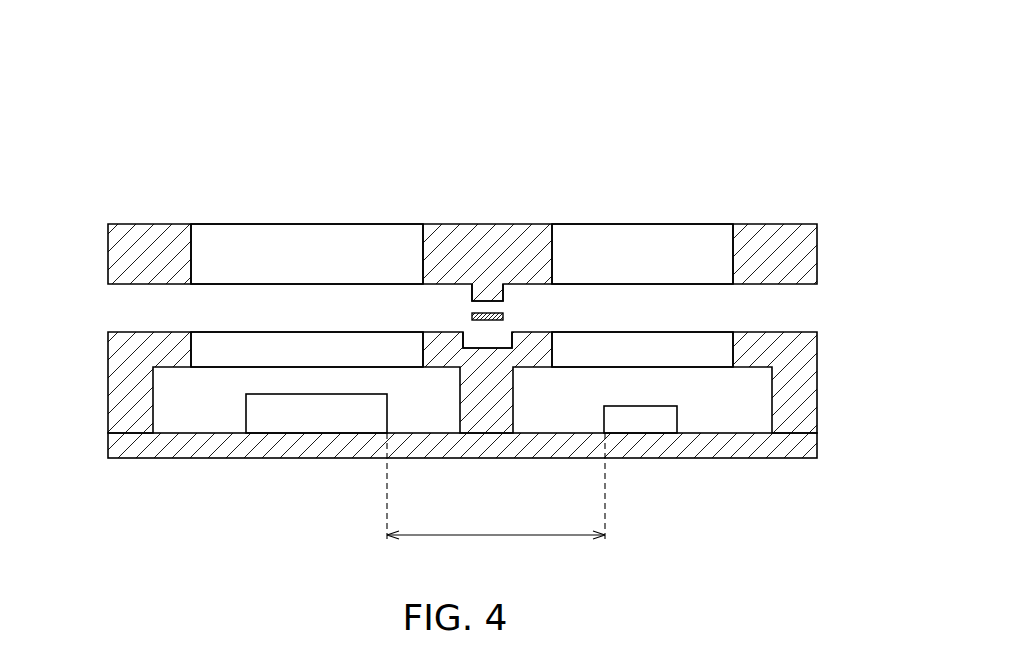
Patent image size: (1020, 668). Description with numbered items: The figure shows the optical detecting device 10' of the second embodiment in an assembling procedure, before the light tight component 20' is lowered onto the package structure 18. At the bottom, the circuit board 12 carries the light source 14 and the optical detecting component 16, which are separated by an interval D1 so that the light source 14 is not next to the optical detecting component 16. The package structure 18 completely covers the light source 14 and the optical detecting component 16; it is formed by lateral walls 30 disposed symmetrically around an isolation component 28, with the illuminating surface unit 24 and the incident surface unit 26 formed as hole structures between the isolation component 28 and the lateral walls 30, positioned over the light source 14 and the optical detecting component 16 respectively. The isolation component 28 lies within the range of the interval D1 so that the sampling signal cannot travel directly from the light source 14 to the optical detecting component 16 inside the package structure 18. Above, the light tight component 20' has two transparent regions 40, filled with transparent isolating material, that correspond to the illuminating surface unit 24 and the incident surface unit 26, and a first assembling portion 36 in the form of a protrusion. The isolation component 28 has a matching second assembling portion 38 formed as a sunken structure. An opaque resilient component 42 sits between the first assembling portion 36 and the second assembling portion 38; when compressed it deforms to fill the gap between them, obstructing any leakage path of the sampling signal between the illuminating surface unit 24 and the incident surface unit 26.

The optical detecting device 10' is at (470, 292).
The circuit board 12 is at (220, 445).
The light source 14 is at (646, 418).
The optical detecting component 16 is at (314, 418).
The package structure 18 is at (459, 338).
The light tight component 20' is at (462, 218).
The illuminating surface unit 24 is at (702, 352).
The incident surface unit 26 is at (317, 352).
The isolation component 28 is at (486, 397).
The lateral walls 30 is at (127, 398).
The first assembling portion 36 is at (487, 297).
The second assembling portion 38 is at (476, 335).
The transparent region 40 is at (311, 250).
The opaque resilient component 42 is at (503, 316).
The interval D1 is at (496, 487).